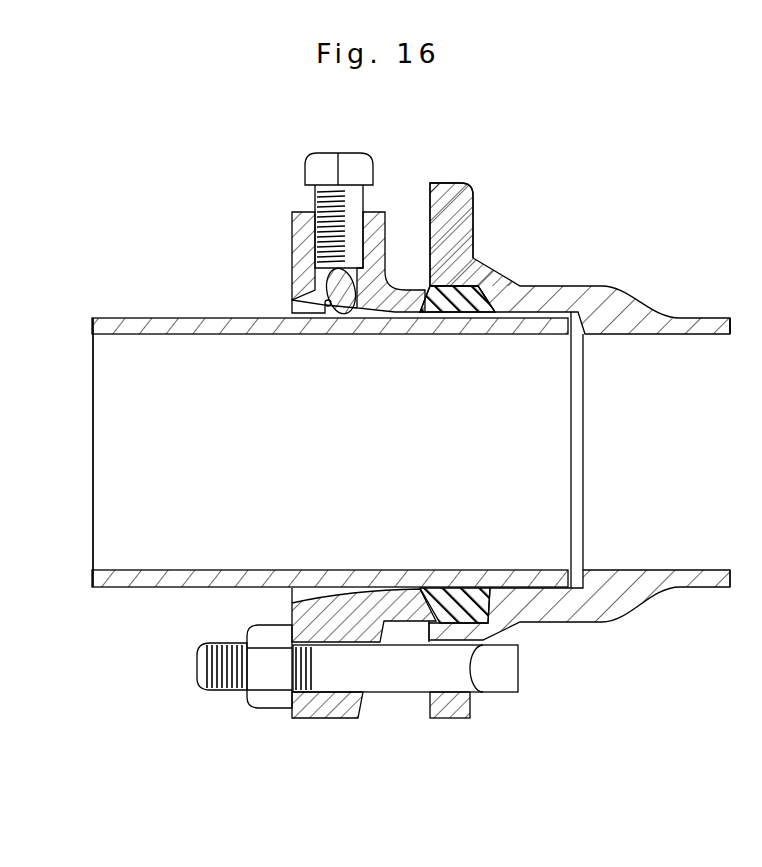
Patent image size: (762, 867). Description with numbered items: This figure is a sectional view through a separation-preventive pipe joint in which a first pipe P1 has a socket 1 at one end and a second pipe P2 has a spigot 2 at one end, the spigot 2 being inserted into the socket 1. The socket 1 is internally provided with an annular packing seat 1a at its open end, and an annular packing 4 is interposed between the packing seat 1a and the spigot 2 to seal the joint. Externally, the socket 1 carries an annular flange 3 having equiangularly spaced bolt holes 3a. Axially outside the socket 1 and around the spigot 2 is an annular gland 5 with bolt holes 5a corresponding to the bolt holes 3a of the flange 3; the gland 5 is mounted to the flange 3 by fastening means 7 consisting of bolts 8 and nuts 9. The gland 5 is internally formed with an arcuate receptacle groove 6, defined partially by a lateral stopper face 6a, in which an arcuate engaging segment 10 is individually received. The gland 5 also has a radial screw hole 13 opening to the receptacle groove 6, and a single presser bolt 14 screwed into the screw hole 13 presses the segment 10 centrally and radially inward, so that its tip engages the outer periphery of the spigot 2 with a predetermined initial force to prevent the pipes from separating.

The socket 1 is at (600, 290).
The annular packing seat 1a is at (462, 300).
The spigot 2 is at (515, 334).
The annular flange 3 is at (466, 193).
The bolt holes 3a is at (464, 700).
The annular packing 4 is at (458, 312).
The annular gland 5 is at (300, 213).
The bolt holes 5a is at (398, 316).
The receptacle groove 6 is at (335, 316).
The lateral stopper face 6a is at (325, 303).
The fastening means 7 is at (232, 712).
The bolts 8 is at (200, 663).
The nuts 9 is at (278, 700).
The engaging segments 10 is at (343, 316).
The screw holes 13 is at (362, 217).
The presser bolts 14 is at (357, 160).
The first pipe P1 is at (710, 333).
The second pipe P2 is at (135, 331).